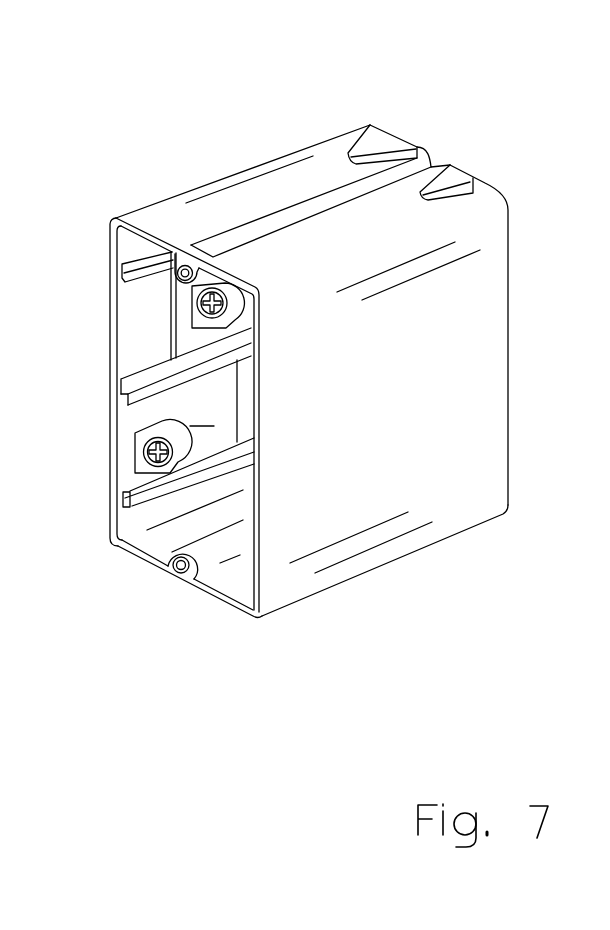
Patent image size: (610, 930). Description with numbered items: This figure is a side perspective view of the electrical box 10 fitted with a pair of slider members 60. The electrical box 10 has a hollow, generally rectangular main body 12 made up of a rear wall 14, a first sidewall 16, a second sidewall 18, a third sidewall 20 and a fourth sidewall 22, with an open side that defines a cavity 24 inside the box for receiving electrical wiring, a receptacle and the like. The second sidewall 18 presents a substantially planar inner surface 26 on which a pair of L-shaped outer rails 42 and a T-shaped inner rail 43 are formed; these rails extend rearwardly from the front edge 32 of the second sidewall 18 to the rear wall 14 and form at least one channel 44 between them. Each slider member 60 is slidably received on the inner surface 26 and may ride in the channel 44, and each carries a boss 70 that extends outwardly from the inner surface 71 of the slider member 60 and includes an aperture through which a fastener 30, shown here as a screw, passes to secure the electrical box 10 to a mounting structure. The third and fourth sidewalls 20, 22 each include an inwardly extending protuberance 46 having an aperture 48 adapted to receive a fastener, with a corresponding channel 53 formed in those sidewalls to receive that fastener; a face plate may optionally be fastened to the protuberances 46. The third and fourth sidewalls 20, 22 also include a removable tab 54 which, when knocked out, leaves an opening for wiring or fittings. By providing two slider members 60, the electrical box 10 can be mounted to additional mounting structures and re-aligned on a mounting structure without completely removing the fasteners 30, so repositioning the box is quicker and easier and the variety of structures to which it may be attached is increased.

The electrical box 10 is at (160, 138).
The main body 12 is at (372, 572).
The rear wall 14 is at (509, 278).
The first sidewall 16 is at (465, 482).
The second sidewall 18 is at (125, 520).
The third sidewall 20 is at (243, 617).
The fourth sidewall 22 is at (215, 183).
The cavity 24 is at (135, 518).
The inner surface 26 is at (168, 548).
The fastener 30 is at (197, 306).
The front edge 32 is at (121, 264).
The outer rail 42 is at (116, 220).
The inner rail 43 is at (126, 397).
The channel 44 is at (121, 320).
The protuberance 46 is at (176, 262).
The aperture 48 is at (186, 266).
The channel 53 is at (298, 212).
The removable tab 54 is at (386, 148).
The slider member 60 is at (190, 343).
The boss 70 is at (192, 328).
The inner surface 71 is at (240, 333).